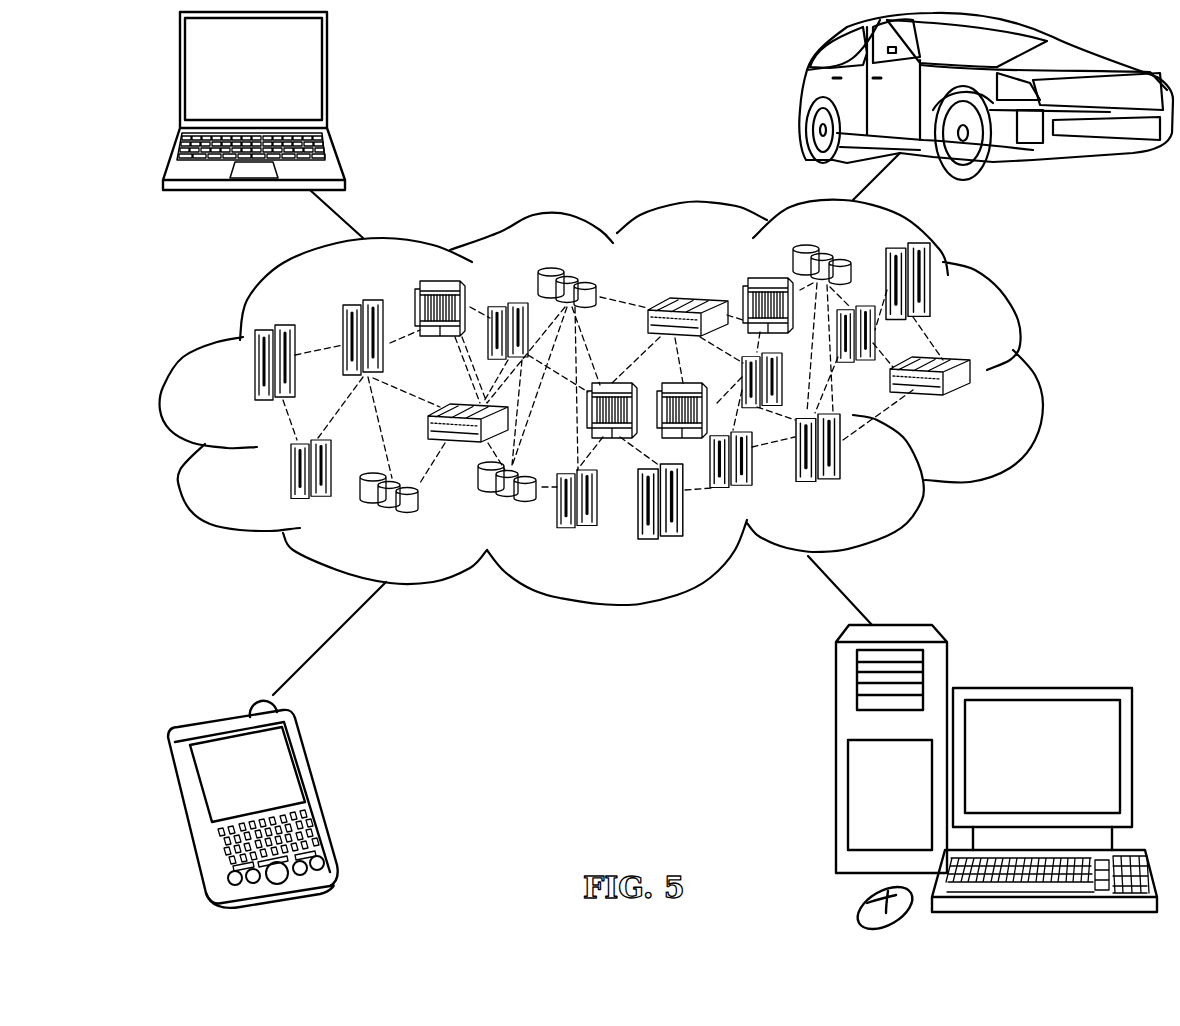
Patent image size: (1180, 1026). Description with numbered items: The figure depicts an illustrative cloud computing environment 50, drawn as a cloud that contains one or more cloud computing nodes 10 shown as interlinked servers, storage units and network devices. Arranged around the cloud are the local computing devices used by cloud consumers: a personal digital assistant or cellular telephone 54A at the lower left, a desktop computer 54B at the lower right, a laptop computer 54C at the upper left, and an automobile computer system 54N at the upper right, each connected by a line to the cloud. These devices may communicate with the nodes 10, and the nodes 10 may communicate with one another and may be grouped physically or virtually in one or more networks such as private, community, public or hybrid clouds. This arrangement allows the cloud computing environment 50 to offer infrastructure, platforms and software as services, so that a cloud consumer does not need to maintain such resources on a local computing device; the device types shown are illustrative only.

The cloud computing node 10 is at (982, 407).
The cloud computing environment 50 is at (1041, 380).
The personal digital assistant or cellular telephone 54A is at (318, 790).
The desktop computer 54B is at (1038, 688).
The laptop computer 54C is at (328, 78).
The automobile computer system 54N is at (806, 97).